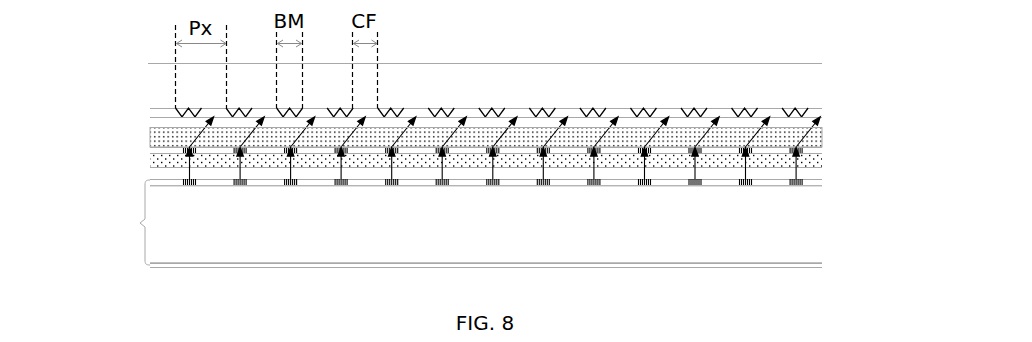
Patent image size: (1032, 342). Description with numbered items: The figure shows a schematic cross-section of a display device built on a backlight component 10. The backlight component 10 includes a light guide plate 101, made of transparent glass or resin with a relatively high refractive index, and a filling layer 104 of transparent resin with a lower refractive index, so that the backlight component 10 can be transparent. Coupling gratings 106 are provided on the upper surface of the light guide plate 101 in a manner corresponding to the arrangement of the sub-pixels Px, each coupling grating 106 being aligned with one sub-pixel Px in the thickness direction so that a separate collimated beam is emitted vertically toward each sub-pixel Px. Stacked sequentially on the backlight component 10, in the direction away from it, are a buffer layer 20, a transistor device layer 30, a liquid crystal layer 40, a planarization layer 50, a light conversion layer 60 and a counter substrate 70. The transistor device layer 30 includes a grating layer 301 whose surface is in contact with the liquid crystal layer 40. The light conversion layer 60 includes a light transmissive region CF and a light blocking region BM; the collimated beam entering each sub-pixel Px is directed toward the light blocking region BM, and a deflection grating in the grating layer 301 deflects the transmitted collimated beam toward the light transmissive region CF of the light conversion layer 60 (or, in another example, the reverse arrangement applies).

The backlight component 10 is at (123, 222).
The light guide plate 101 is at (816, 221).
The filling layer 104 is at (822, 265).
The coupling grating 106 is at (822, 185).
The buffer layer 20 is at (157, 172).
The transistor device layer 30 is at (822, 160).
The grating layer 301 is at (157, 148).
The liquid crystal layer 40 is at (822, 137).
The planarization layer 50 is at (157, 119).
The light conversion layer 60 is at (822, 111).
The counter substrate 70 is at (157, 85).